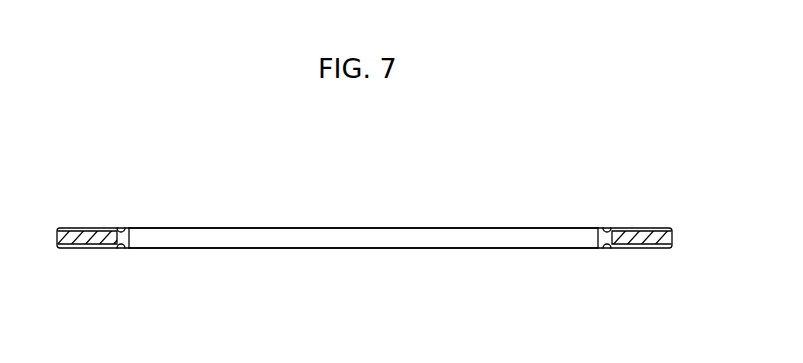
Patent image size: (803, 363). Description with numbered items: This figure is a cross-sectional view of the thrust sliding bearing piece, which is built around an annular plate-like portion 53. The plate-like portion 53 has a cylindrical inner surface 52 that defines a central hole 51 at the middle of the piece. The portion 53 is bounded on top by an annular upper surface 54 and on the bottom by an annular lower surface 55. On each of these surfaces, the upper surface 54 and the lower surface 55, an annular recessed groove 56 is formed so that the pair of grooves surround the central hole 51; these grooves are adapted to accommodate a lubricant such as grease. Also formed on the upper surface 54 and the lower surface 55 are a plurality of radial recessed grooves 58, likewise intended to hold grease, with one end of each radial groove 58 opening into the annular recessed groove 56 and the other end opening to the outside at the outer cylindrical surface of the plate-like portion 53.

The central hole 51 is at (290, 232).
The cylindrical inner surface 52 is at (508, 242).
The annular plate-like portion 53 is at (635, 238).
The annular upper surface 54 is at (418, 228).
The annular lower surface 55 is at (360, 249).
The annular recessed groove 56 is at (120, 228).
The radial recessed groove 58 is at (88, 228).